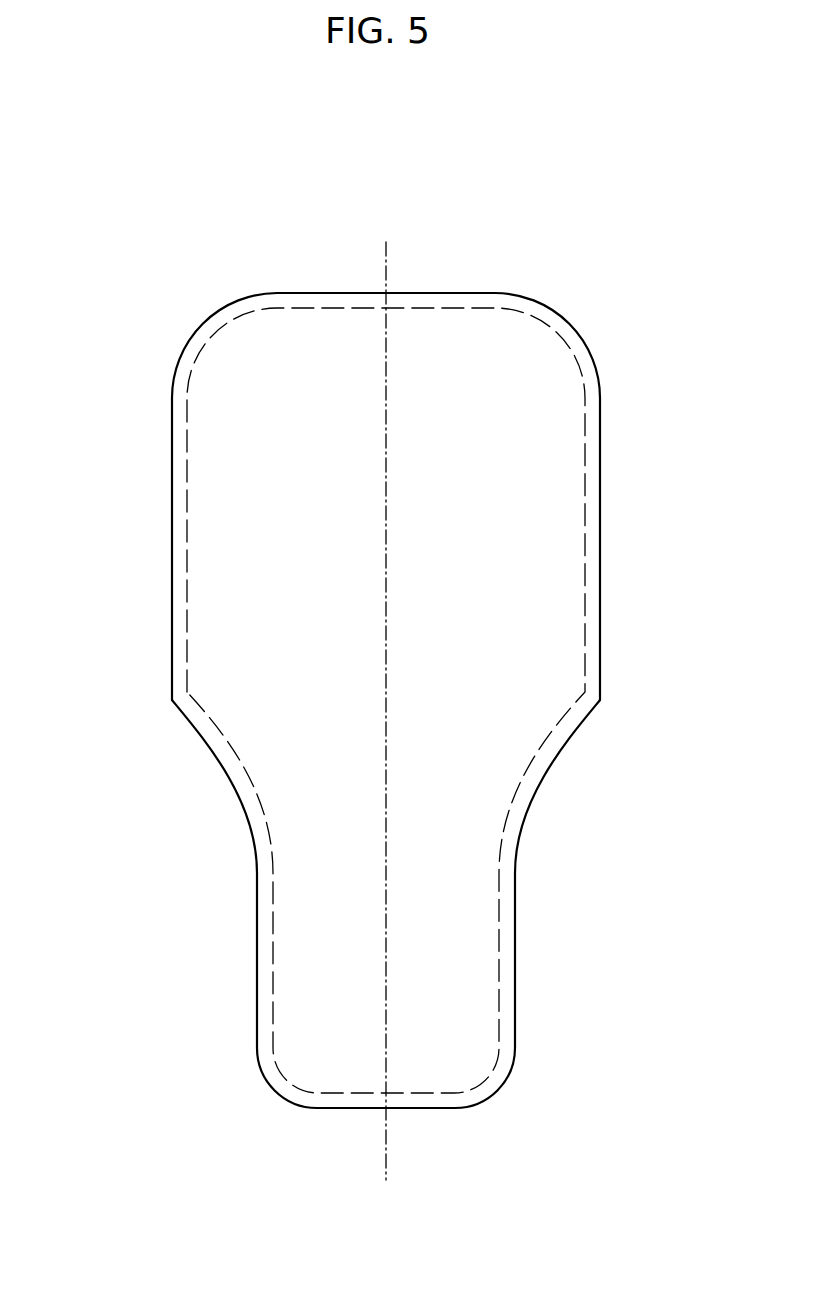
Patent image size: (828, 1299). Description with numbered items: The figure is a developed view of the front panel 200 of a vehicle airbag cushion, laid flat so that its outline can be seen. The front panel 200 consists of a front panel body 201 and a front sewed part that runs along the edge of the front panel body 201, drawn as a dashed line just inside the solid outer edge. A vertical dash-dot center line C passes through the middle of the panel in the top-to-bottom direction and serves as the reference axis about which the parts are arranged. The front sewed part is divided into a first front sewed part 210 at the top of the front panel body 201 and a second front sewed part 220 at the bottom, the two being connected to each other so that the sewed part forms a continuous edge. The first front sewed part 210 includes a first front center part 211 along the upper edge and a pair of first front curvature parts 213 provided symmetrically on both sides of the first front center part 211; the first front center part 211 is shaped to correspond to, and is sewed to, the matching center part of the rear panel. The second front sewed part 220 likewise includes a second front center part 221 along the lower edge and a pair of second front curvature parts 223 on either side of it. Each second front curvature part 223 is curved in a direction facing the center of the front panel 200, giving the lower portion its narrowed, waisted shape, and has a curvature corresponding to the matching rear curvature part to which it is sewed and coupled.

The front panel 200 is at (122, 191).
The front panel body 201 is at (257, 613).
The first front sewed part 210 is at (376, 447).
The first front center part 211 is at (458, 293).
The first front curvature part 213 is at (601, 481).
The second front sewed part 220 is at (397, 931).
The second front center part 221 is at (413, 1105).
The second front curvature part 223 is at (257, 878).
The center line C is at (385, 1162).